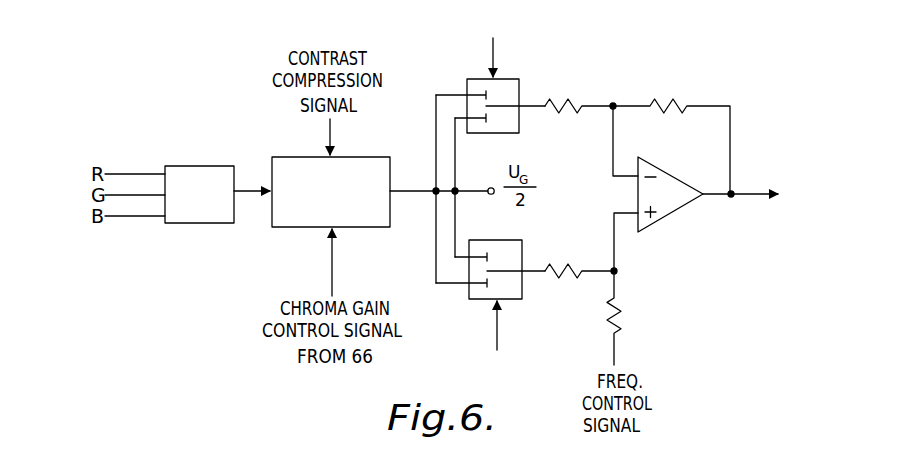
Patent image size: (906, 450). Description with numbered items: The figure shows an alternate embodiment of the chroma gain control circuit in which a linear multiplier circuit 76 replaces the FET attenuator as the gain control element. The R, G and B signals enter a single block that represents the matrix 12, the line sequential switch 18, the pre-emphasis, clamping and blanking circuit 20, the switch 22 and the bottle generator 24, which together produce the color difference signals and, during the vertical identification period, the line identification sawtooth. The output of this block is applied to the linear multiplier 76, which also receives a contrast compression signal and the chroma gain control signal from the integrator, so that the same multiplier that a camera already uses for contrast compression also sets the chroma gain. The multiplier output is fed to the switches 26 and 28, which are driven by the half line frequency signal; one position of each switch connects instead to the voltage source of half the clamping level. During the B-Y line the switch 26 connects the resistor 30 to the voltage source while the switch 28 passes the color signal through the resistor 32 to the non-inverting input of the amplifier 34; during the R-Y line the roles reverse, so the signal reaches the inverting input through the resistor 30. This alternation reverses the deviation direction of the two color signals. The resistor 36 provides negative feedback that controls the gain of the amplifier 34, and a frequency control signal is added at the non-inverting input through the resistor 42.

The matrix 12 is at (184, 162).
The line sequential switch 18 is at (184, 162).
The pre-emphasis, clamping and blanking circuit 20 is at (184, 162).
The switch 22 is at (184, 162).
The bottle generator 24 is at (194, 165).
The switch 26 is at (512, 80).
The switch 28 is at (480, 300).
The resistor 30 is at (568, 100).
The resistor 32 is at (567, 265).
The amplifier 34 is at (678, 177).
The resistor 36 is at (677, 103).
The resistor 42 is at (624, 322).
The linear multiplier circuit 76 is at (368, 228).